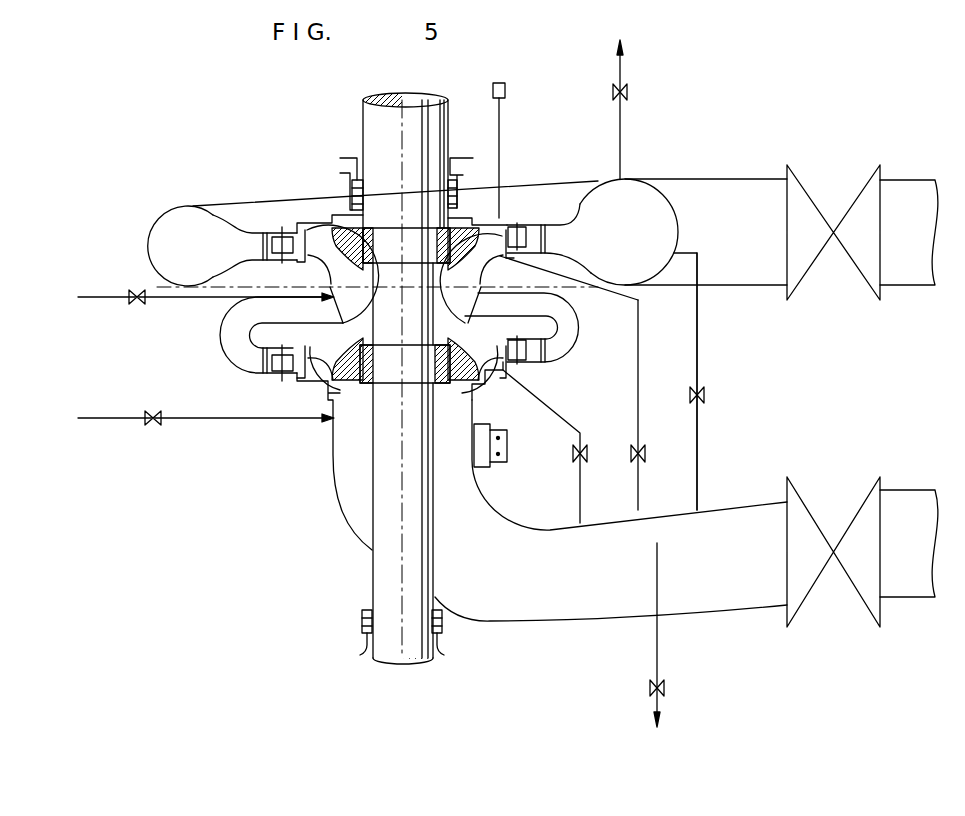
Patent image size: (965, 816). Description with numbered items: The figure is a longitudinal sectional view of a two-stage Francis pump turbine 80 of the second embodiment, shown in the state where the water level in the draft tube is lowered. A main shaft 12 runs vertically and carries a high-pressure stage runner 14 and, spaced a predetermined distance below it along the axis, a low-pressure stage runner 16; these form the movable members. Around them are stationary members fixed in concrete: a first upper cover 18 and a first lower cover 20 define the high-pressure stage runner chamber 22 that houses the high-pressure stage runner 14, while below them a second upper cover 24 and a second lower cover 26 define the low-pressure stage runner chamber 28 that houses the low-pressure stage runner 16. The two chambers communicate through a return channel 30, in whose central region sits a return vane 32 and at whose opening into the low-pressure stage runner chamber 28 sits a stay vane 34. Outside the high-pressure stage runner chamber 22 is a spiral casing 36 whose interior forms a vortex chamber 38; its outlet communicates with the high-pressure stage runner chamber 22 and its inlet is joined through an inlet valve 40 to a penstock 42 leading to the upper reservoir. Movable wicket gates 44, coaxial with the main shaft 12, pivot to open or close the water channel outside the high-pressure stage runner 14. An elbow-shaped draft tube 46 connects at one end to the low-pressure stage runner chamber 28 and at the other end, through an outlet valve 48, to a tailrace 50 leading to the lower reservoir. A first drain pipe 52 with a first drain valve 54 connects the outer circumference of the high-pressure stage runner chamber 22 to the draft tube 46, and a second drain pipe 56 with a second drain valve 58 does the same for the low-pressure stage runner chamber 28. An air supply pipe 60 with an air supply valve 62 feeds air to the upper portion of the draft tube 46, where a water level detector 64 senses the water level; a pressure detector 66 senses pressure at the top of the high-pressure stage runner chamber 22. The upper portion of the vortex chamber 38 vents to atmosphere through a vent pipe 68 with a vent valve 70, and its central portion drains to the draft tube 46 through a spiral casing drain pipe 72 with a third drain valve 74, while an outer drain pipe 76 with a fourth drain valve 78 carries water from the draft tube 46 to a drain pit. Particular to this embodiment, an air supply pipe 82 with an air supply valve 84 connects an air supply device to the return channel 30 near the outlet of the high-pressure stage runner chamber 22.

The main shaft 12 is at (448, 125).
The high-pressure stage runner 14 is at (428, 274).
The low-pressure stage runner 16 is at (440, 386).
The first upper cover 18 is at (330, 221).
The first lower cover 20 is at (310, 262).
The high-pressure stage runner chamber 22 is at (487, 262).
The second upper cover 24 is at (350, 326).
The second lower cover 26 is at (312, 385).
The low-pressure stage runner chamber 28 is at (486, 384).
The return channel 30 is at (570, 305).
The return vane 32 is at (565, 338).
The stay vane 34 is at (518, 365).
The spiral casing 36 is at (668, 287).
The vortex chamber 38 is at (636, 285).
The inlet valve 40 is at (797, 195).
The penstock 42 is at (905, 180).
The movable wicket gates 44 is at (528, 252).
The draft tube 46 is at (506, 528).
The outlet valve 48 is at (792, 497).
The tailrace 50 is at (903, 490).
The first drain pipe 52 is at (639, 385).
The first drain valve 54 is at (643, 455).
The second drain pipe 56 is at (570, 425).
The second drain valve 58 is at (582, 455).
The air supply pipe 60 is at (226, 418).
The air supply valve 62 is at (153, 426).
The water level detector 64 is at (507, 445).
The pressure detector 66 is at (506, 90).
The vent pipe 68 is at (622, 122).
The vent valve 70 is at (628, 92).
The spiral casing drain pipe 72 is at (698, 369).
The third drain valve 74 is at (703, 398).
The outer drain pipe 76 is at (658, 645).
The fourth drain valve 78 is at (663, 690).
The two-stage Francis pump turbine 80 is at (457, 100).
The air supply pipe 82 is at (190, 302).
The air supply valve 84 is at (137, 305).